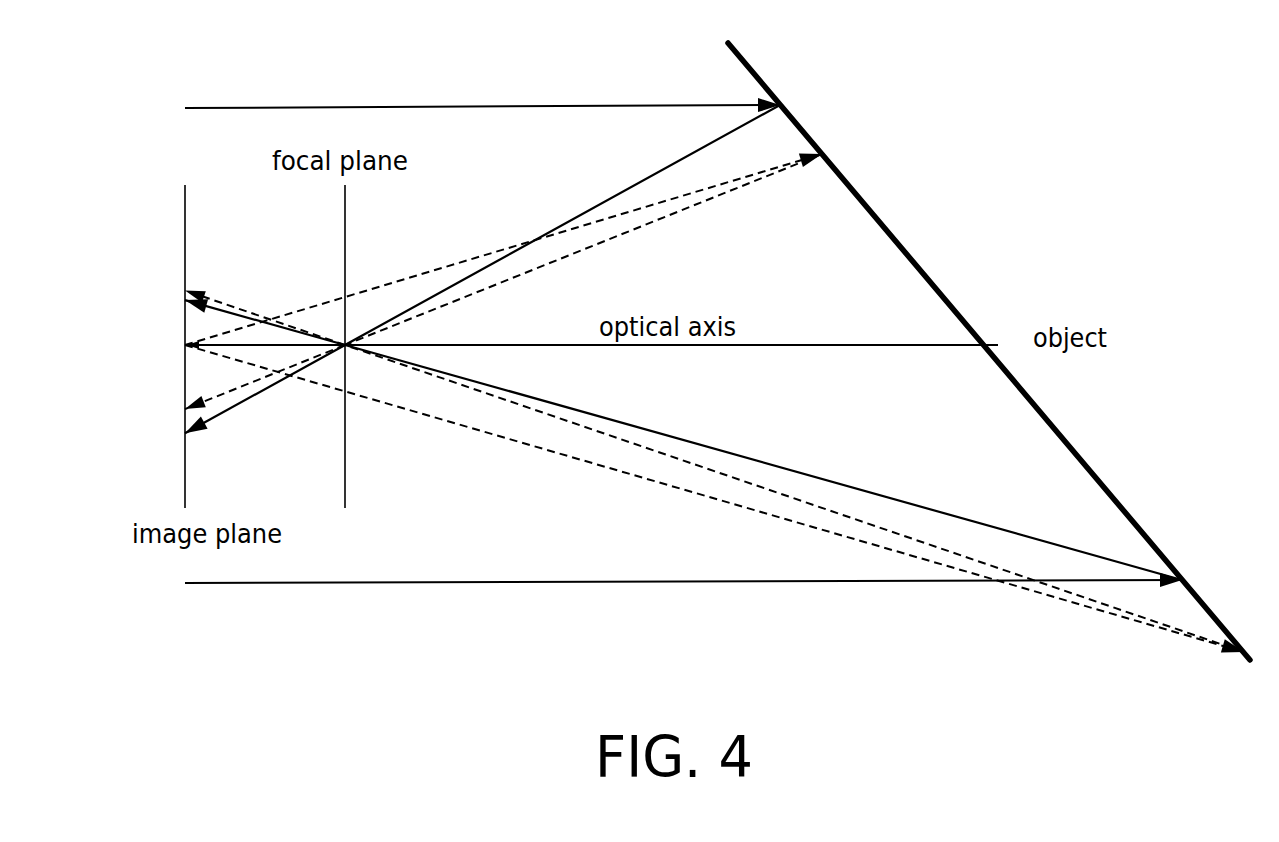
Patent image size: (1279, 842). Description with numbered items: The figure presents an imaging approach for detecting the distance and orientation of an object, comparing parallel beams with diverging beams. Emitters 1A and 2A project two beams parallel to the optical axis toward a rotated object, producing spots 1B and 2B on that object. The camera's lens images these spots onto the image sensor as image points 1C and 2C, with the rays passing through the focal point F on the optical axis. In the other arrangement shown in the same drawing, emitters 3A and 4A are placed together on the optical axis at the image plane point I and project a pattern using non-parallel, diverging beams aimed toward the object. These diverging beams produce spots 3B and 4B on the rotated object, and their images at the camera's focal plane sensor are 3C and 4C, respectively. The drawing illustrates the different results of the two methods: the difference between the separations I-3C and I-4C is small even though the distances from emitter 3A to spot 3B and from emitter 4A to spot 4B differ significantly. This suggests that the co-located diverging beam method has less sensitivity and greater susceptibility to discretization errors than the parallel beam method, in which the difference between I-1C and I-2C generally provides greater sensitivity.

The emitter 1A is at (461, 115).
The spot 1B is at (584, 216).
The image of spot 1C is at (243, 399).
The emitter 2A is at (662, 585).
The spot 2B is at (788, 470).
The image of spot 2C is at (243, 320).
The emitter 3A is at (459, 259).
The spot 3B is at (603, 237).
The image of spot 3C is at (243, 384).
The emitter 4A is at (688, 492).
The spot 4B is at (800, 519).
The image of spot 4C is at (243, 306).
The image plane intersection point I is at (540, 348).
The focal point F is at (356, 346).